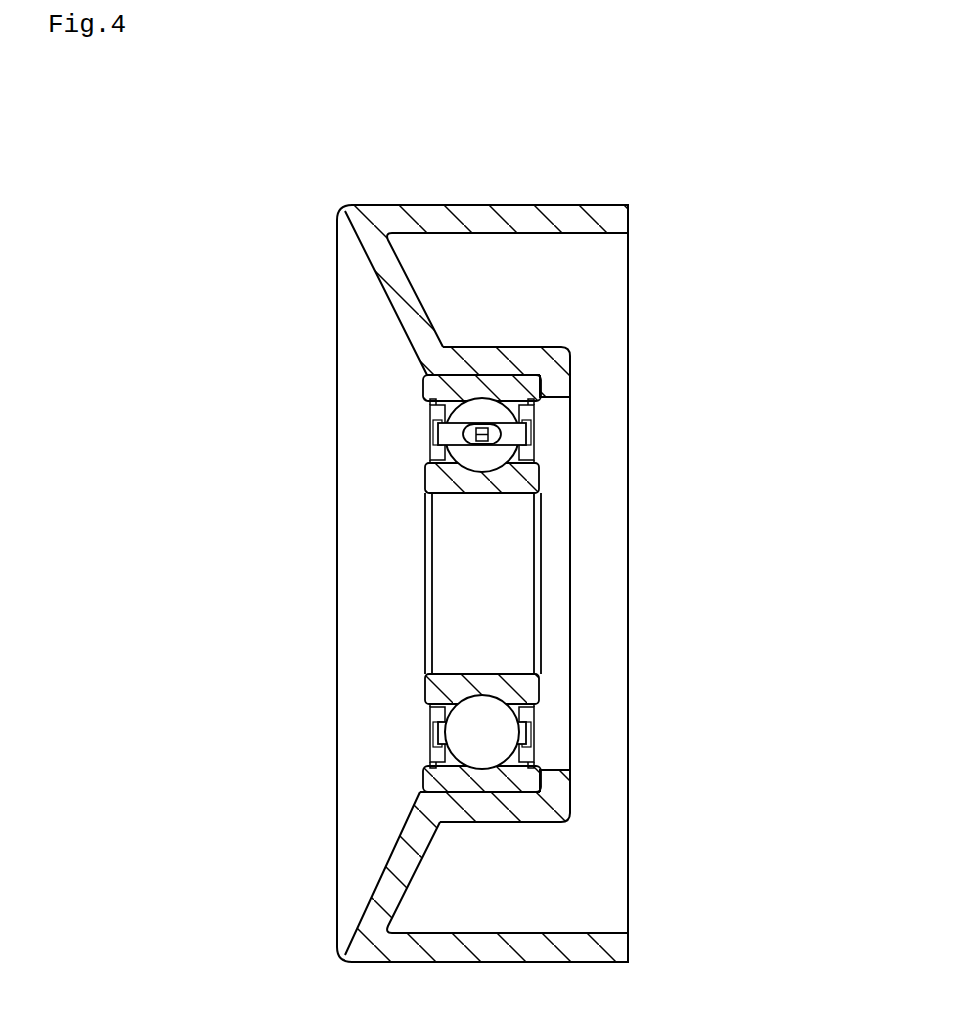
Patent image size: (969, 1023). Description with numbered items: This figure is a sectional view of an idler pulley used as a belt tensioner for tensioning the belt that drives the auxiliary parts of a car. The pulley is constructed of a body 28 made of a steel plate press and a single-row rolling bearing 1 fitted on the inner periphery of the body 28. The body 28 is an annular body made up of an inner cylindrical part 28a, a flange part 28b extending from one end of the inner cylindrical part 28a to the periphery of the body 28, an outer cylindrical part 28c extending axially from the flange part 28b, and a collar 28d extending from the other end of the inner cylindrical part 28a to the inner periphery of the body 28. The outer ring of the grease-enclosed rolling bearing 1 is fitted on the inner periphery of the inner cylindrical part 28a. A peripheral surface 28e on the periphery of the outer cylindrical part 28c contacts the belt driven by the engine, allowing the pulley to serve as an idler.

The body 28 is at (642, 227).
The inner cylindrical part 28a is at (522, 347).
The flange part 28b is at (367, 252).
The outer cylindrical part 28c is at (380, 213).
The collar 28d is at (555, 390).
The peripheral surface 28e is at (523, 205).
The rolling bearing 1 is at (410, 385).